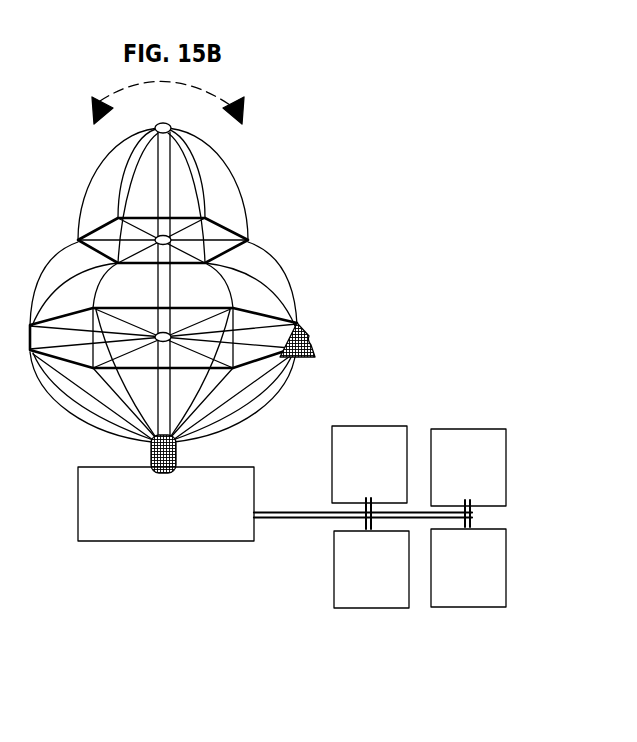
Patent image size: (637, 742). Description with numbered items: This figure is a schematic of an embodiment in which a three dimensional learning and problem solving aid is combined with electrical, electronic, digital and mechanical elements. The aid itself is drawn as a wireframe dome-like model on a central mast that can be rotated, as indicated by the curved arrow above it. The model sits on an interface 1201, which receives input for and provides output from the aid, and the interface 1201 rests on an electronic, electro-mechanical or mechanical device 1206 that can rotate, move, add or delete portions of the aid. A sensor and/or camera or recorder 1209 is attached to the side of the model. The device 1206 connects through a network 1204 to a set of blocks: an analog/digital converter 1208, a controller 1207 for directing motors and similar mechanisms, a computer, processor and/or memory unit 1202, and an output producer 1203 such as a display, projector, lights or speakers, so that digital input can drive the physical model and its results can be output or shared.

The interface 1201 is at (177, 452).
The computer, processor and/or memory unit 1202 is at (468, 568).
The output producer 1203 is at (468, 467).
The network 1204 is at (287, 519).
The electronic, electro-mechanical, or mechanical device 1206 is at (166, 504).
The controller 1207 is at (371, 569).
The analog/digital converter 1208 is at (369, 464).
The sensor and/or camera or recorder 1209 is at (316, 358).